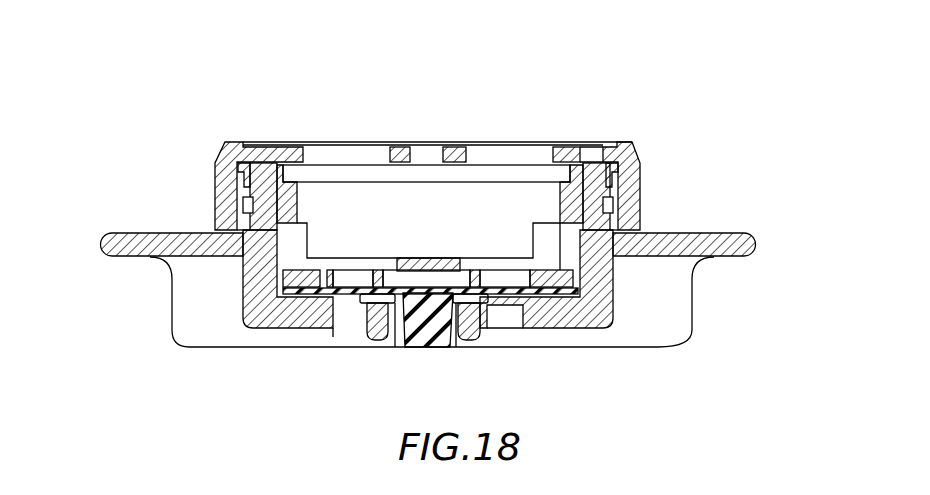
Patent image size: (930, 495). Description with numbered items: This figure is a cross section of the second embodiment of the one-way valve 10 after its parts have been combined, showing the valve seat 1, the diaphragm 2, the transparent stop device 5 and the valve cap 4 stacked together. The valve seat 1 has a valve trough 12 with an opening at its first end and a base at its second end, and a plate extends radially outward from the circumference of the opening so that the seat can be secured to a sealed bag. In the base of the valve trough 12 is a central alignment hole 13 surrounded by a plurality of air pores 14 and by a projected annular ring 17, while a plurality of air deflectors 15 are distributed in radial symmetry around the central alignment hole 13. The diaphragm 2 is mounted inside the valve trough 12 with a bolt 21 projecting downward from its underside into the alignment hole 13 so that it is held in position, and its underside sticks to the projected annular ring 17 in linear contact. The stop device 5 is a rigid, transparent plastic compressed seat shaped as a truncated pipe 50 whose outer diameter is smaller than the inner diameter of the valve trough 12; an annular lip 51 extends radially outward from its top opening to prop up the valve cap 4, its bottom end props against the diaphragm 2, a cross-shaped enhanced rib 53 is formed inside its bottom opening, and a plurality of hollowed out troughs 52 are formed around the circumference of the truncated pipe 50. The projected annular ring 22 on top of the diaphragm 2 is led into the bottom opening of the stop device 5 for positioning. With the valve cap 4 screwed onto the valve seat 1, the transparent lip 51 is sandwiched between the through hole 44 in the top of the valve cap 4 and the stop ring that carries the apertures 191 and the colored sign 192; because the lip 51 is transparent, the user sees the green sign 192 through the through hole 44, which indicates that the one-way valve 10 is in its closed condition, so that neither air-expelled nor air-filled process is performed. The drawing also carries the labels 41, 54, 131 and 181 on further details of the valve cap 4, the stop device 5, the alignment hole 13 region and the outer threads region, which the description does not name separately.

The valve seat 1 is at (735, 240).
The diaphragm 2 is at (613, 282).
The valve cap 4 is at (224, 153).
The stop device 5 is at (328, 197).
The one-way valve 10 is at (455, 80).
The valve trough 12 is at (240, 228).
The central alignment hole 13 is at (492, 302).
The air pores 14 is at (357, 320).
The air deflectors 15 is at (692, 337).
The projected annular ring 17 is at (275, 298).
The bolt 21 is at (416, 330).
The projected annular ring 22 is at (372, 318).
The contact blocks 41 is at (385, 150).
The through hole 44 is at (587, 150).
The truncated pipe 50 is at (262, 190).
The annular lip 51 is at (246, 170).
The hollowed out troughs 52 is at (300, 262).
The enhanced rib 53 is at (352, 272).
The tray 54 is at (480, 270).
The strip end 131 is at (508, 306).
The engaging notch 181 is at (243, 205).
The apertures 191 is at (640, 152).
The sign 192 is at (622, 142).